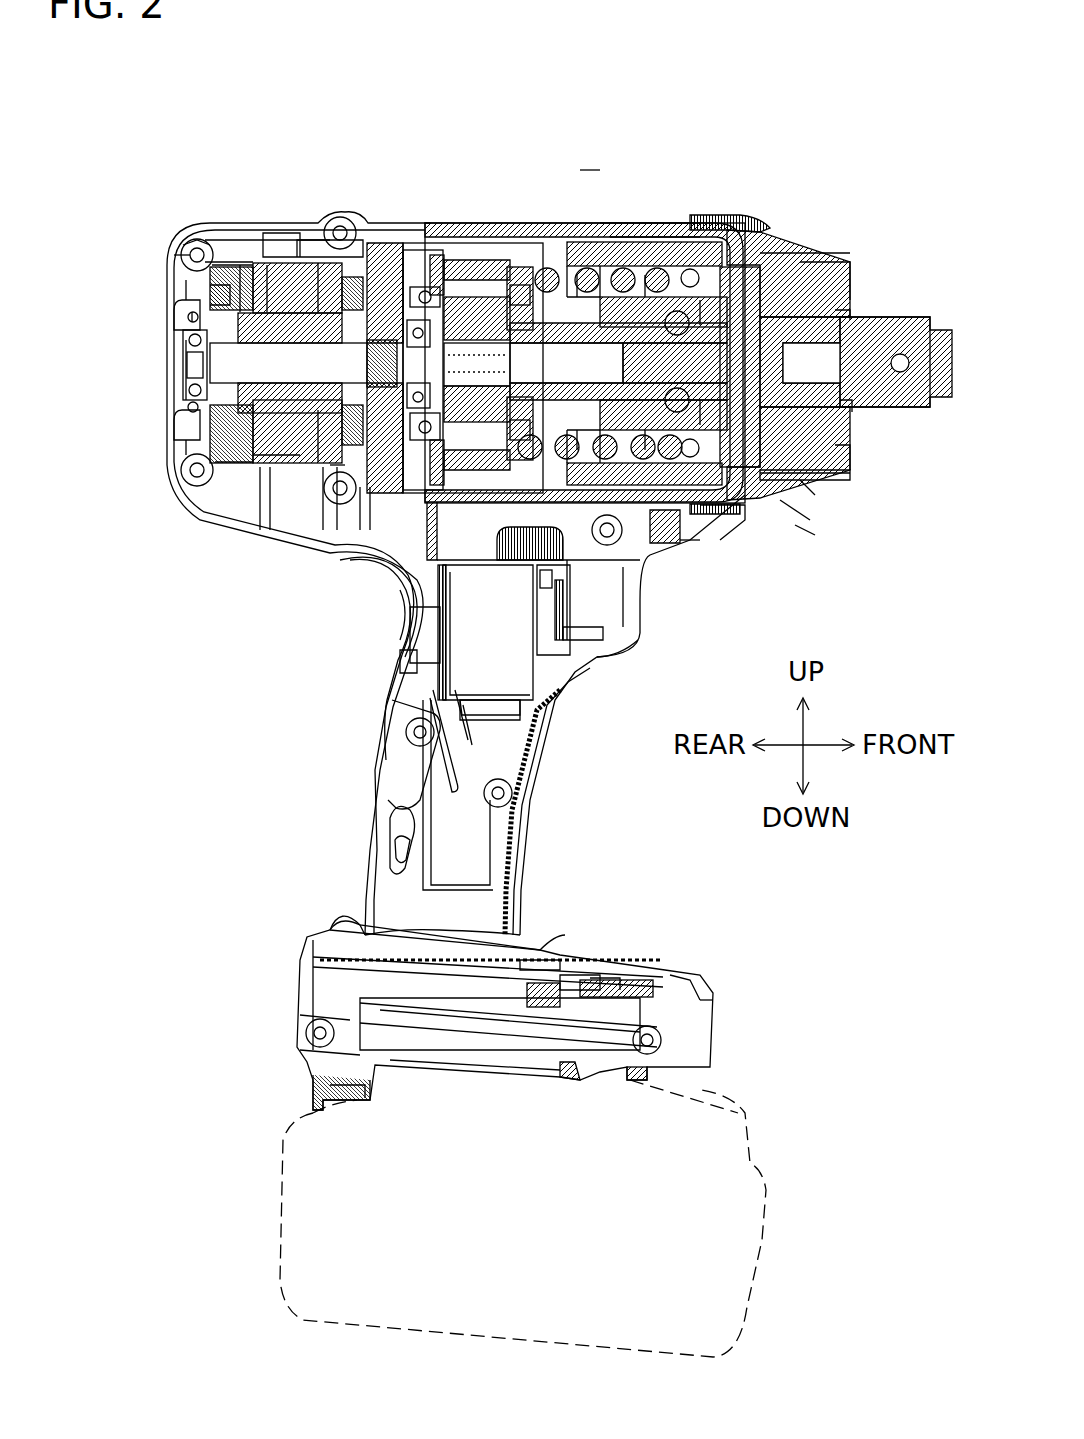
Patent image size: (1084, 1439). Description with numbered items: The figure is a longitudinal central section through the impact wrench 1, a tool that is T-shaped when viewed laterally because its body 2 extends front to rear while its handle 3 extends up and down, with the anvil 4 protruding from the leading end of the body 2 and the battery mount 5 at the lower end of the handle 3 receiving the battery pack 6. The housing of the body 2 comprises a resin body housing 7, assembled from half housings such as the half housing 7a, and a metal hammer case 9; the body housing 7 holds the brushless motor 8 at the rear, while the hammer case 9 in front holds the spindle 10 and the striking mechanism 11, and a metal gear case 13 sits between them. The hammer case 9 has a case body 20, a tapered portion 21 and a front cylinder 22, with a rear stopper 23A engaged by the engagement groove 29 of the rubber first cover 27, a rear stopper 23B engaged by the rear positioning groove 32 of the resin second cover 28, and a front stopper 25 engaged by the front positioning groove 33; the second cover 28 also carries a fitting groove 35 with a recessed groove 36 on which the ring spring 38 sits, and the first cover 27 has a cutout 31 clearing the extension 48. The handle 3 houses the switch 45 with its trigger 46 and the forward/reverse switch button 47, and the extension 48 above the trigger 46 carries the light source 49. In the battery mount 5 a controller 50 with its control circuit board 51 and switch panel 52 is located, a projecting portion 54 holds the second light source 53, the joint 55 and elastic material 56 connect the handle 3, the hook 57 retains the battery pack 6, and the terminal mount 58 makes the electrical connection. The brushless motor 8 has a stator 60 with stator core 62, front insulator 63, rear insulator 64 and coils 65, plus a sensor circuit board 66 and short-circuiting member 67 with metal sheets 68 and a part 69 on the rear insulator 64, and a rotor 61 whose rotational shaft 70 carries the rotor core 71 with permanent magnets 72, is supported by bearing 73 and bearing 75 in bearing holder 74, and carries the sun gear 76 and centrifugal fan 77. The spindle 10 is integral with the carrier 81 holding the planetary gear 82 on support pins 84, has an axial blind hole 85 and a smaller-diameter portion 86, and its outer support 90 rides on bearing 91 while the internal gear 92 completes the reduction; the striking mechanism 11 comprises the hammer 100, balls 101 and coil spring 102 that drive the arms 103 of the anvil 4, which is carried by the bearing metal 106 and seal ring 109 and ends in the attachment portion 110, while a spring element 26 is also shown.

The impact wrench 1 is at (592, 163).
The body 2 is at (502, 240).
The handle 3 is at (375, 746).
The anvil 4 is at (860, 295).
The battery mount 5 is at (300, 990).
The battery pack 6 is at (745, 1250).
The body housing 7 is at (185, 226).
The half housing 7a is at (166, 256).
The brushless motor 8 is at (290, 262).
The hammer case 9 is at (570, 225).
The spindle 10 is at (628, 250).
The striking mechanism 11 is at (620, 235).
The gear case 13 is at (406, 258).
The case body 20 is at (532, 322).
The tapered portion 21 is at (742, 250).
The front cylinder 22 is at (830, 472).
The rear stopper 23A is at (726, 235).
The rear stopper 23B is at (760, 240).
The front stopper 25 is at (830, 256).
The coil spring 26 is at (702, 268).
The first cover 27 is at (670, 250).
The second cover 28 is at (795, 250).
The engagement groove 29 is at (735, 530).
The cutout 31 is at (690, 547).
The rear positioning groove 32 is at (758, 486).
The front positioning groove 33 is at (808, 256).
The fitting groove 35 is at (790, 522).
The recessed groove 36 is at (810, 492).
The ring spring 38 is at (805, 533).
The switch 45 is at (480, 628).
The trigger 46 is at (605, 645).
The forward/reverse switch button 47 is at (408, 588).
The extension 48 is at (617, 632).
The light source 49 is at (665, 542).
The controller 50 is at (330, 928).
The control circuit board 51 is at (563, 975).
The switch panel 52 is at (600, 983).
The second light source 53 is at (680, 998).
The projecting portion 54 is at (705, 1010).
The joint 55 is at (490, 840).
The elastic material 56 is at (545, 962).
The hook 57 is at (662, 1042).
The terminal mount 58 is at (310, 1080).
The stator 60 is at (255, 262).
The rotor 61 is at (238, 468).
The stator core 62 is at (303, 310).
The front insulator 63 is at (328, 262).
The rear insulator 64 is at (217, 266).
The coil 65 is at (318, 262).
The sensor circuit board 66 is at (188, 319).
The short-circuiting member 67 is at (196, 248).
The metal sheet 68 is at (205, 301).
The coil end 69 is at (241, 264).
The rotational shaft 70 is at (215, 372).
The rotor core 71 is at (258, 462).
The permanent magnet 72 is at (267, 266).
The bearing 73 is at (190, 344).
The bearing holder 74 is at (382, 262).
The bearing 75 is at (362, 258).
The sun gear 76 is at (516, 290).
The centrifugal fan 77 is at (338, 470).
The carrier 81 is at (482, 262).
The planetary gear 82 is at (462, 270).
The support pin 84 is at (456, 300).
The axial blind hole 85 is at (545, 300).
The smaller-diameter portion 86 is at (868, 412).
The outer support 90 is at (394, 270).
The bearing 91 is at (417, 270).
The internal gear 92 is at (429, 268).
The hammer 100 is at (650, 240).
The ball 101 is at (696, 245).
The coil spring 102 is at (592, 245).
The arm 103 is at (765, 250).
The bearing metal 106 is at (865, 440).
The seal ring 109 is at (860, 308).
The attachment portion 110 is at (920, 315).